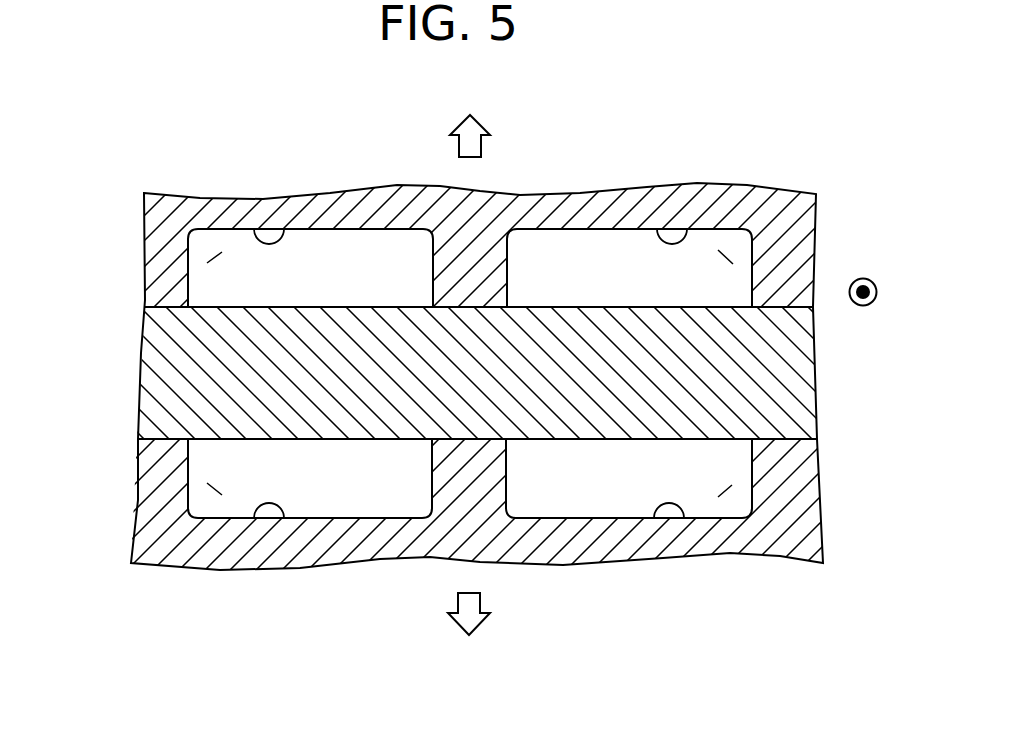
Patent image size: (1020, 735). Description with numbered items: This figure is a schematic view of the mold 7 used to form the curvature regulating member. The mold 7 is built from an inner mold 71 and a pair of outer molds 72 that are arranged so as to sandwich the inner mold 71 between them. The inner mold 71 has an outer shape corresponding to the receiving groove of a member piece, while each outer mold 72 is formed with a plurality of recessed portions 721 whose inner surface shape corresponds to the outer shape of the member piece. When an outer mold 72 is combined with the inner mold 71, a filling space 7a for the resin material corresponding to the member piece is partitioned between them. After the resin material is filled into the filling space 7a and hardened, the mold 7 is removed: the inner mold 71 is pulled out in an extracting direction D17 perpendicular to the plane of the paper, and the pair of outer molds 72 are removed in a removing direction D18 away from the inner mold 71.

The mold 7 is at (381, 97).
The filling space 7a is at (212, 258).
The inner mold 71 is at (140, 353).
The outer mold 72 is at (147, 263).
The recessed portion 721 is at (283, 229).
The extracting direction D17 is at (862, 306).
The removing direction D18 is at (481, 150).